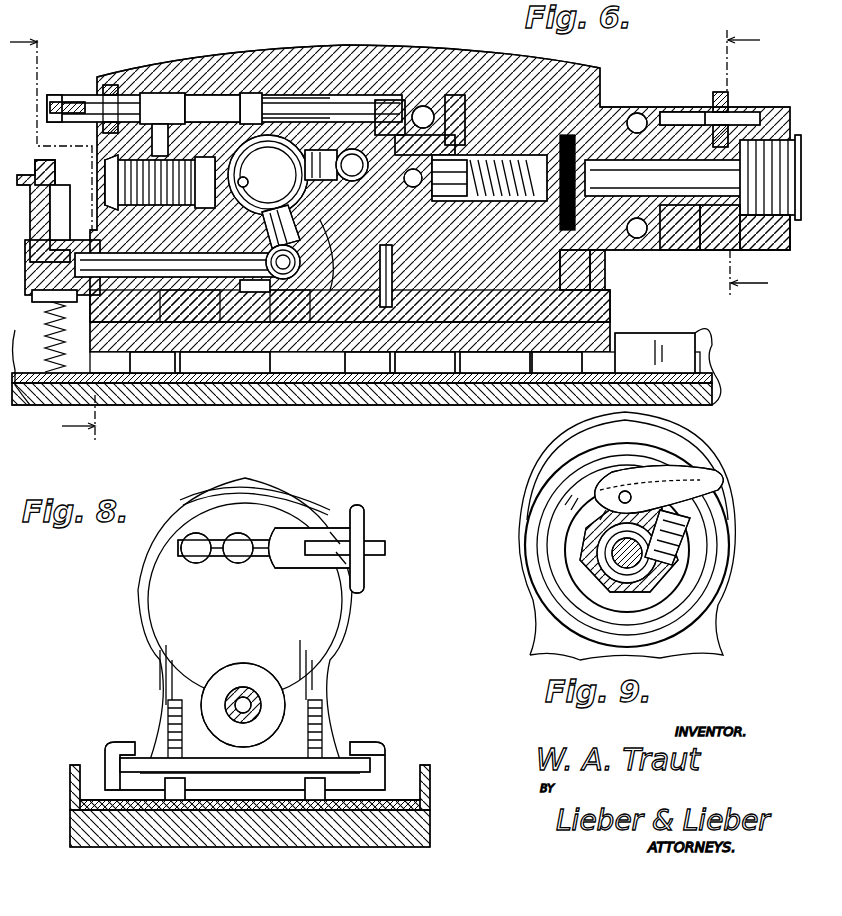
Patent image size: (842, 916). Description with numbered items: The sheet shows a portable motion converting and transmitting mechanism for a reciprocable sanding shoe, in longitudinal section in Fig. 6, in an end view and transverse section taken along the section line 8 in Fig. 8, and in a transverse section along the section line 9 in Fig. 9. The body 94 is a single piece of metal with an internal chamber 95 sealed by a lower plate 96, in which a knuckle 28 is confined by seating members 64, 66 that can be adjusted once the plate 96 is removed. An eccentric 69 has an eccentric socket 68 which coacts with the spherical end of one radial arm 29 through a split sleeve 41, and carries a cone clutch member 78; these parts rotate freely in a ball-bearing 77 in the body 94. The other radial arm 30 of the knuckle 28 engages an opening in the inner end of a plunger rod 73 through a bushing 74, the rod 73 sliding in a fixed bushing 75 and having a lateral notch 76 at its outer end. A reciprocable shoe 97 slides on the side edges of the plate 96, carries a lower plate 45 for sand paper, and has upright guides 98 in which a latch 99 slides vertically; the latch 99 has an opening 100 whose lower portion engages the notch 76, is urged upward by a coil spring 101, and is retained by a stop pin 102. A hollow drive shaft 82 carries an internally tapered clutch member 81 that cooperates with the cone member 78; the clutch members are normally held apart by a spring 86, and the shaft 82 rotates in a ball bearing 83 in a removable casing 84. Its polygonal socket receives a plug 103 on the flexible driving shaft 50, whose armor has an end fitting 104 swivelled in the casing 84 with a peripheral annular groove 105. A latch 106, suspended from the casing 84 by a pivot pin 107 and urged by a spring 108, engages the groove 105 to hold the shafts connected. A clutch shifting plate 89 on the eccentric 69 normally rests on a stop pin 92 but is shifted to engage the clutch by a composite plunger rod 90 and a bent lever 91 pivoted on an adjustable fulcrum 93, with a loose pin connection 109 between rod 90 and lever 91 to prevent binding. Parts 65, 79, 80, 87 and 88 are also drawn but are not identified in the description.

In FIG. 6, the section line 8 is at (60, 236).
In FIG. 6, the section line 9 is at (739, 162).
In FIG. 6, the knuckle 28 is at (268, 175).
In FIG. 6, the radial arm 29 is at (336, 165).
In FIG. 6, the radial arm 30 is at (283, 262).
In FIG. 6, the split sleeve 41 is at (260, 225).
In FIG. 6, the lower plate 45 is at (430, 395).
In FIG. 8, the lower plate 45 is at (405, 828).
In FIG. 6, the flexible driving shaft 50 is at (800, 135).
In FIG. 6, the seating member 64 is at (222, 200).
In FIG. 6, the adjusting screw 65 is at (195, 215).
In FIG. 6, the seating member 66 is at (328, 278).
In FIG. 6, the eccentric socket 68 is at (340, 140).
In FIG. 6, the eccentric 69 is at (372, 222).
In FIG. 6, the plunger rod 73 is at (250, 285).
In FIG. 8, the plunger rod 73 is at (248, 700).
In FIG. 6, the bushing 74 is at (290, 306).
In FIG. 6, the fixed bushing 75 is at (190, 300).
In FIG. 8, the fixed bushing 75 is at (228, 680).
In FIG. 6, the lateral notch 76 is at (80, 258).
In FIG. 6, the ball-bearing 77 is at (423, 105).
In FIG. 6, the cone clutch member 78 is at (456, 120).
In FIG. 6, the slot 79 is at (450, 200).
In FIG. 6, the slot 80 is at (430, 190).
In FIG. 6, the internally tapered clutch member 81 is at (500, 105).
In FIG. 6, the hollow drive shaft 82 is at (580, 148).
In FIG. 6, the ball bearing 83 is at (640, 240).
In FIG. 6, the removable casing 84 is at (640, 112).
In FIG. 6, the spring 86 is at (672, 178).
In FIG. 6, the stop 87 is at (598, 265).
In FIG. 6, the stop block 88 is at (575, 285).
In FIG. 6, the clutch shifting plate 89 is at (385, 130).
In FIG. 6, the composite plunger rod 90 is at (250, 100).
In FIG. 8, the composite plunger rod 90 is at (240, 540).
In FIG. 6, the bent lever 91 is at (52, 95).
In FIG. 8, the bent lever 91 is at (365, 540).
In FIG. 6, the stop pin 92 is at (392, 300).
In FIG. 8, the adjustable fulcrum 93 is at (190, 563).
In FIG. 6, the body 94 is at (350, 52).
In FIG. 8, the body 94 is at (150, 622).
In FIG. 9, the body 94 is at (573, 440).
In FIG. 6, the internal chamber 95 is at (203, 306).
In FIG. 6, the lower plate 96 is at (296, 328).
In FIG. 8, the lower plate 96 is at (355, 760).
In FIG. 6, the reciprocable shoe 97 is at (712, 348).
In FIG. 8, the reciprocable shoe 97 is at (118, 775).
In FIG. 6, the upright guides 98 is at (36, 235).
In FIG. 6, the latch 99 is at (42, 175).
In FIG. 6, the opening 100 is at (70, 240).
In FIG. 6, the coil spring 101 is at (55, 375).
In FIG. 6, the stop pin 102 is at (152, 362).
In FIG. 6, the plug 103 is at (685, 245).
In FIG. 9, the plug 103 is at (615, 553).
In FIG. 6, the end fitting 104 is at (778, 240).
In FIG. 9, the end fitting 104 is at (597, 590).
In FIG. 6, the peripheral annular groove 105 is at (725, 245).
In FIG. 9, the peripheral annular groove 105 is at (645, 575).
In FIG. 6, the latch 106 is at (716, 92).
In FIG. 9, the latch 106 is at (570, 535).
In FIG. 6, the pivot pin 107 is at (738, 112).
In FIG. 9, the pivot pin 107 is at (618, 494).
In FIG. 9, the spring 108 is at (680, 532).
In FIG. 6, the loose pin connection 109 is at (70, 92).
In FIG. 8, the loose pin connection 109 is at (240, 563).